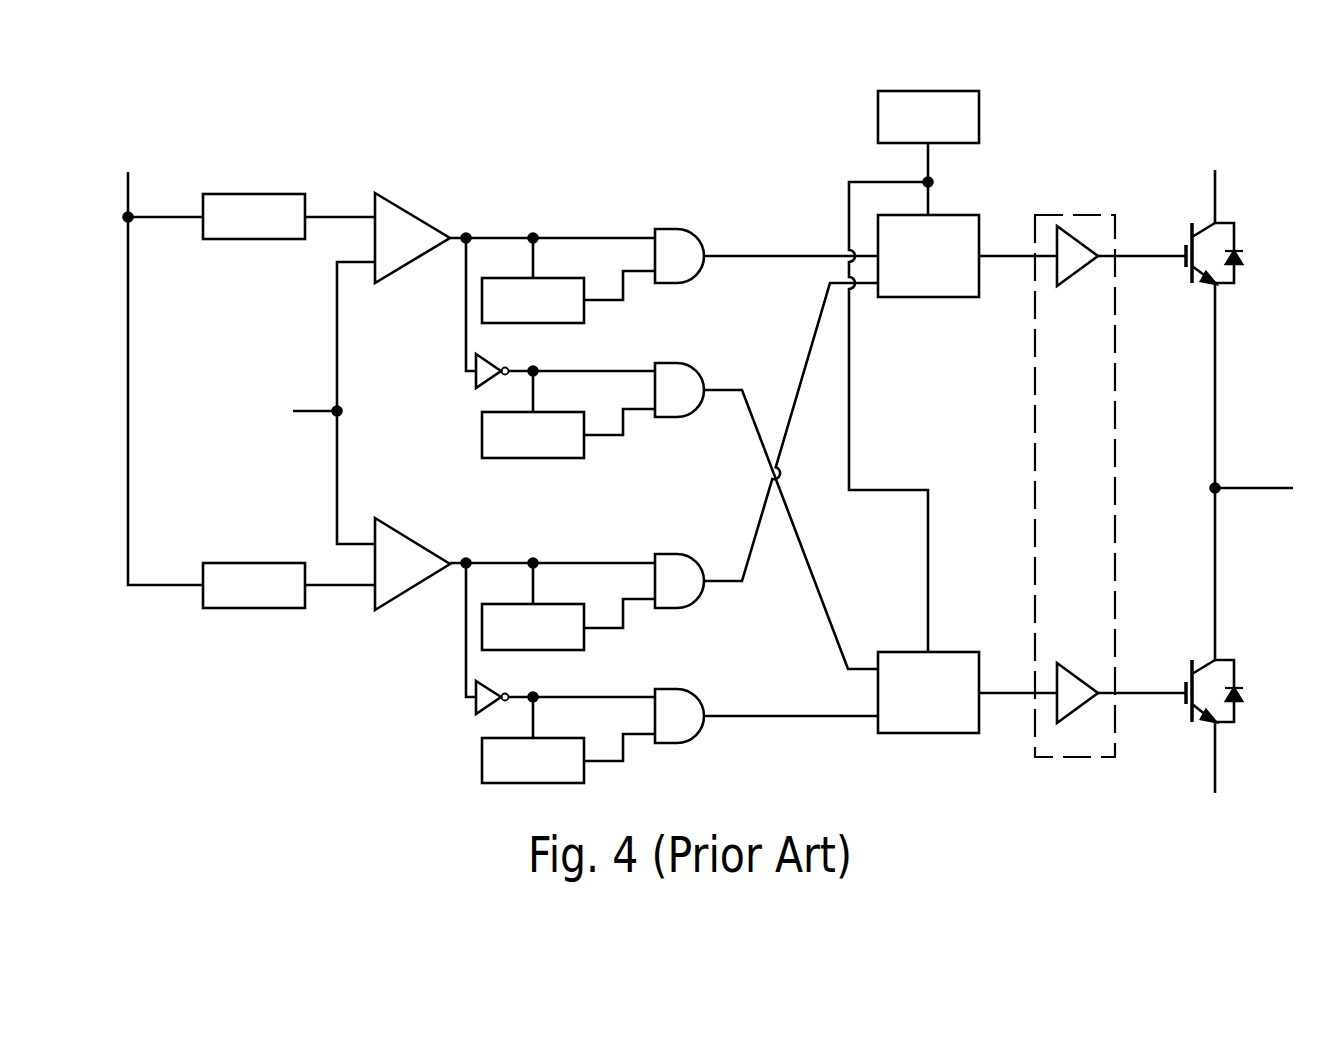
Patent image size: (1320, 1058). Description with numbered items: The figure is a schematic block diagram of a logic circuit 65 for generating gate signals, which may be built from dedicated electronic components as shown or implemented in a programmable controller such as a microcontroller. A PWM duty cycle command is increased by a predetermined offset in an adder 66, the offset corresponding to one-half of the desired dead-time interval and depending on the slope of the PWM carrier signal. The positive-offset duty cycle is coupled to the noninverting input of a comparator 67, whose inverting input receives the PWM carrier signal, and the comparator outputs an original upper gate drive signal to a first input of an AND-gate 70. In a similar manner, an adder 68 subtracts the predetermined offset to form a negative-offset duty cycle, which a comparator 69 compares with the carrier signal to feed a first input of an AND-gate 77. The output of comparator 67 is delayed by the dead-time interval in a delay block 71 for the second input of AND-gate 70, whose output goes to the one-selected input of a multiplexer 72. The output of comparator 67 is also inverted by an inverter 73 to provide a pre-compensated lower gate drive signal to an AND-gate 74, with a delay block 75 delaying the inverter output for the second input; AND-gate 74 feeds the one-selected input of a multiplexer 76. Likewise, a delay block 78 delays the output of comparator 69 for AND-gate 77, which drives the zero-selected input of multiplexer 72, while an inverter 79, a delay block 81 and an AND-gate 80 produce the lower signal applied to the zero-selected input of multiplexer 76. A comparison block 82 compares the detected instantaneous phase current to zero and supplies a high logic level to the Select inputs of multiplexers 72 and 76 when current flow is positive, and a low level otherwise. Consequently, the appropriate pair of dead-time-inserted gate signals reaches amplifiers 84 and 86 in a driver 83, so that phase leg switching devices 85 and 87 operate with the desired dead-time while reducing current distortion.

The logic circuit 65 is at (641, 158).
The adder 66 is at (253, 193).
The comparator 67 is at (416, 215).
The adder 68 is at (252, 609).
The comparator 69 is at (421, 580).
The AND-gate 70 is at (678, 229).
The delay block 71 is at (553, 278).
The multiplexer 72 is at (958, 298).
The inverter 73 is at (476, 380).
The AND-gate 74 is at (677, 418).
The delay block 75 is at (482, 435).
The multiplexer 76 is at (912, 734).
The AND-gate 77 is at (680, 554).
The delay block 78 is at (553, 604).
The inverter 79 is at (476, 708).
The AND-gate 80 is at (677, 744).
The delay block 81 is at (482, 761).
The comparison block 82 is at (928, 90).
The driver 83 is at (1062, 215).
The amplifier 84 is at (1083, 240).
The phase leg switching device 85 is at (1190, 276).
The amplifier 86 is at (1080, 678).
The phase leg switching device 87 is at (1190, 712).